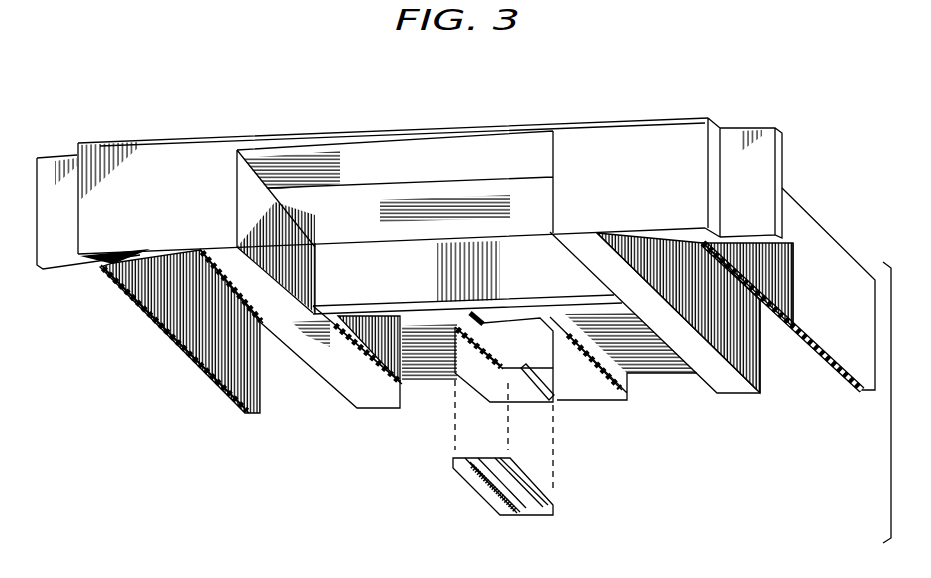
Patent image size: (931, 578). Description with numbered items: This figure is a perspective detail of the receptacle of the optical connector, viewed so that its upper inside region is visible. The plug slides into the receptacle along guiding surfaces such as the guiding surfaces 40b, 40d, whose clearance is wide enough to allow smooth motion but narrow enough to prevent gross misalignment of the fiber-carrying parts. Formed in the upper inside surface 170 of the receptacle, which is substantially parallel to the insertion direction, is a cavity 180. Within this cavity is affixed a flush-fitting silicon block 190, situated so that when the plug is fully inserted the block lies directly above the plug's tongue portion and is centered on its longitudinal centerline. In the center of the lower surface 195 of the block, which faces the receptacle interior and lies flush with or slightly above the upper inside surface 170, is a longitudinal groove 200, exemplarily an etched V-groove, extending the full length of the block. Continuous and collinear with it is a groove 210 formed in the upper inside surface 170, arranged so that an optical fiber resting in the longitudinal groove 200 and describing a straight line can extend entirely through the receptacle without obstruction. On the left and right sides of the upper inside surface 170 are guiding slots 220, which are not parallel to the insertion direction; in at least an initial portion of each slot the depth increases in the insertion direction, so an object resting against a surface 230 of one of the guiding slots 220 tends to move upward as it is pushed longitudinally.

The guiding surface 40b is at (284, 220).
The guiding surface 40d is at (462, 212).
The upper inside surface 170 is at (588, 382).
The cavity 180 is at (483, 388).
The silicon block 190 is at (523, 513).
The lower surface 195 is at (480, 492).
The longitudinal groove 200 is at (503, 516).
The groove 210 is at (540, 400).
The guiding slots 220 is at (400, 350).
The surface 230 is at (373, 383).